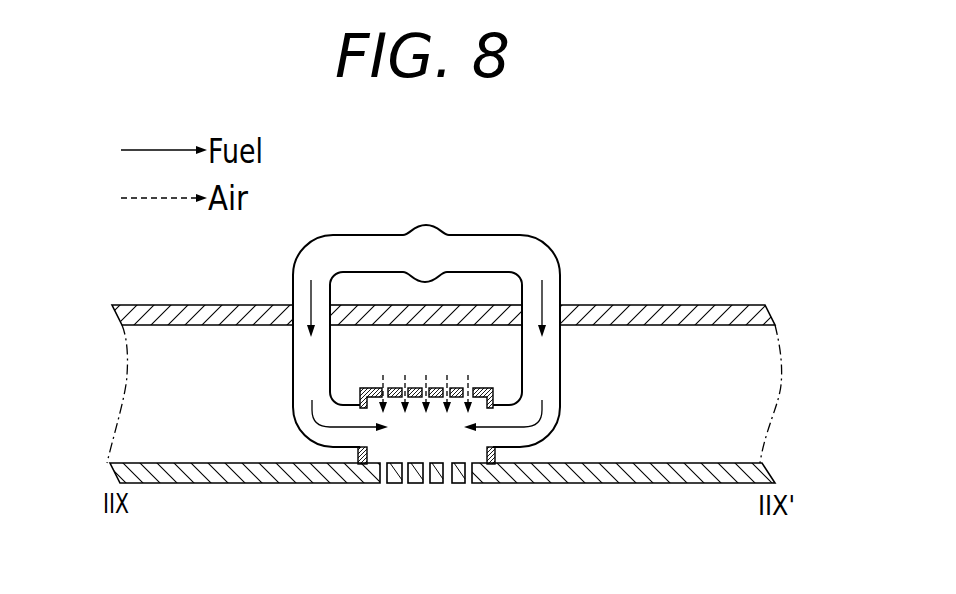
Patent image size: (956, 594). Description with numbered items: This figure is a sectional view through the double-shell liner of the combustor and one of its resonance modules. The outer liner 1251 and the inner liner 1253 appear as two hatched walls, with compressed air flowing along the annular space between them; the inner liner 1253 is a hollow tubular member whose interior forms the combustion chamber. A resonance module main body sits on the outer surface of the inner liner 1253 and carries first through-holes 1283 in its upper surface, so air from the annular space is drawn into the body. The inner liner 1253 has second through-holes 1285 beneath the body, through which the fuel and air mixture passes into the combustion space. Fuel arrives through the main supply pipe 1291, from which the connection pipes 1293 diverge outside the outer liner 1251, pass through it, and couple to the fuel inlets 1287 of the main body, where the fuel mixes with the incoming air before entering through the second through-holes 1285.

The outer liner 1251 is at (705, 315).
The inner liner 1253 is at (652, 477).
The first through-holes 1283 is at (382, 390).
The second through-holes 1285 is at (428, 473).
The fuel inlets 1287 is at (493, 435).
The main supply pipe 1291 is at (427, 238).
The connection pipes 1293 is at (562, 290).